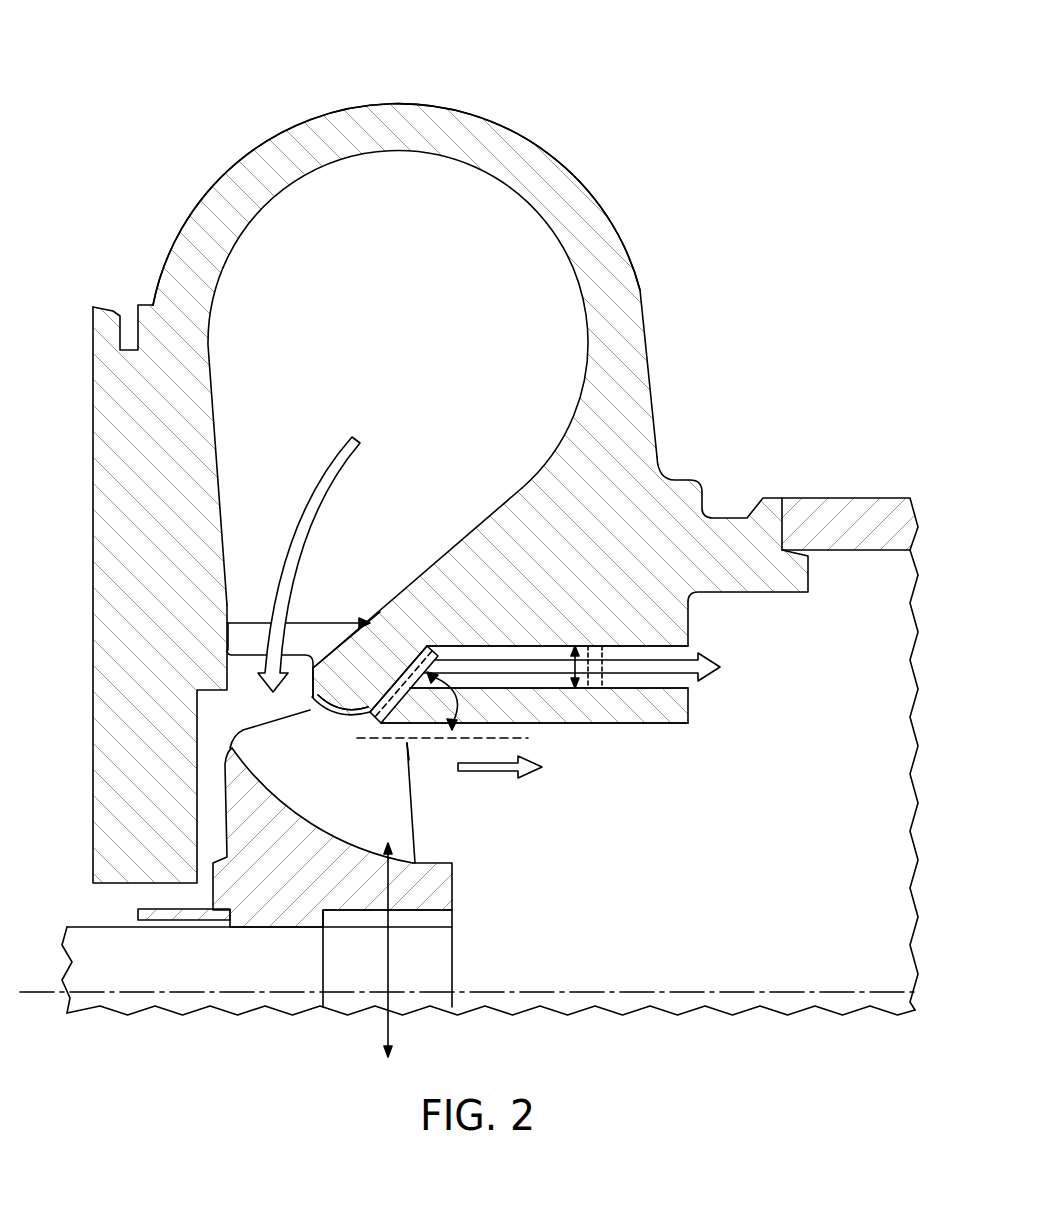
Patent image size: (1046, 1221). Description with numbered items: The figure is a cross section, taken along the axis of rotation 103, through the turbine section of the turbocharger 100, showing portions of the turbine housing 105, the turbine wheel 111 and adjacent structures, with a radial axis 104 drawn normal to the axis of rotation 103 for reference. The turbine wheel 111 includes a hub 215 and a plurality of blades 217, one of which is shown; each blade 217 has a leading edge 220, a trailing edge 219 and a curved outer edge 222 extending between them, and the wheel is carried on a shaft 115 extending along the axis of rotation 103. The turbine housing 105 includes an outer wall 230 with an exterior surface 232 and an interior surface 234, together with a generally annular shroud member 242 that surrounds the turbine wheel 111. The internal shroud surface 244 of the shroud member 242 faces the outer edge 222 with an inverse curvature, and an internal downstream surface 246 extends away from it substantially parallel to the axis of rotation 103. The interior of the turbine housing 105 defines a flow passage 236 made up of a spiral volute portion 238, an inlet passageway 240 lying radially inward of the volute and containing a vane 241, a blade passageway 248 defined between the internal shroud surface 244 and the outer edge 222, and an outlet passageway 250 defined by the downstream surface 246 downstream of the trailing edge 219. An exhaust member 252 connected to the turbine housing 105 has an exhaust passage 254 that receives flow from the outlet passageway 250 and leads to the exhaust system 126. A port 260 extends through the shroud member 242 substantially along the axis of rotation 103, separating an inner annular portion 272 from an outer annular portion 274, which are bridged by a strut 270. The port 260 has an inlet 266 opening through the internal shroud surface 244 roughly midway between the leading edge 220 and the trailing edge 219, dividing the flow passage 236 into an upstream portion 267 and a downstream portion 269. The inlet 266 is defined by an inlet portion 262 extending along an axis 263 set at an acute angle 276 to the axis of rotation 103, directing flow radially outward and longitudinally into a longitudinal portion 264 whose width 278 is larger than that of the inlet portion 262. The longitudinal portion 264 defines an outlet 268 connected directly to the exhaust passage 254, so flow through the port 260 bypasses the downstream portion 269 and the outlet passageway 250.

The turbocharger 100 is at (139, 104).
The axis of rotation 103 is at (45, 993).
The radial axis 104 is at (390, 975).
The turbine housing 105 is at (478, 103).
The turbine wheel 111 is at (288, 910).
The shaft 115 is at (90, 947).
The exhaust system 126 is at (800, 429).
The hub 215 is at (308, 887).
The blade 217 is at (376, 842).
The trailing edge 219 is at (412, 826).
The leading edge 220 is at (235, 725).
The outer edge 222 is at (338, 713).
The outer wall 230 is at (258, 163).
The exterior surface 232 is at (330, 99).
The interior surface 234 is at (362, 151).
The flow passage 236 is at (247, 664).
The spiral volute portion 238 is at (423, 362).
The inlet passageway 240 is at (250, 696).
The vane 241 is at (320, 626).
The shroud member 242 is at (368, 632).
The internal shroud surface 244 is at (343, 723).
The internal downstream surface 246 is at (612, 724).
The blade passageway 248 is at (307, 688).
The outlet passageway 250 is at (538, 862).
The exhaust member 252 is at (872, 516).
The exhaust passage 254 is at (847, 791).
The port 260 is at (553, 651).
The inlet portion 262 is at (438, 645).
The axis 263 is at (455, 633).
The longitudinal portion 264 is at (692, 649).
The inlet 266 is at (378, 726).
The upstream portion 267 is at (308, 700).
The outlet 268 is at (692, 688).
The downstream portion 269 is at (400, 730).
The strut 270 is at (603, 648).
The inner annular portion 272 is at (674, 722).
The outer annular portion 274 is at (607, 531).
The angle 276 is at (462, 713).
The width 278 is at (523, 757).